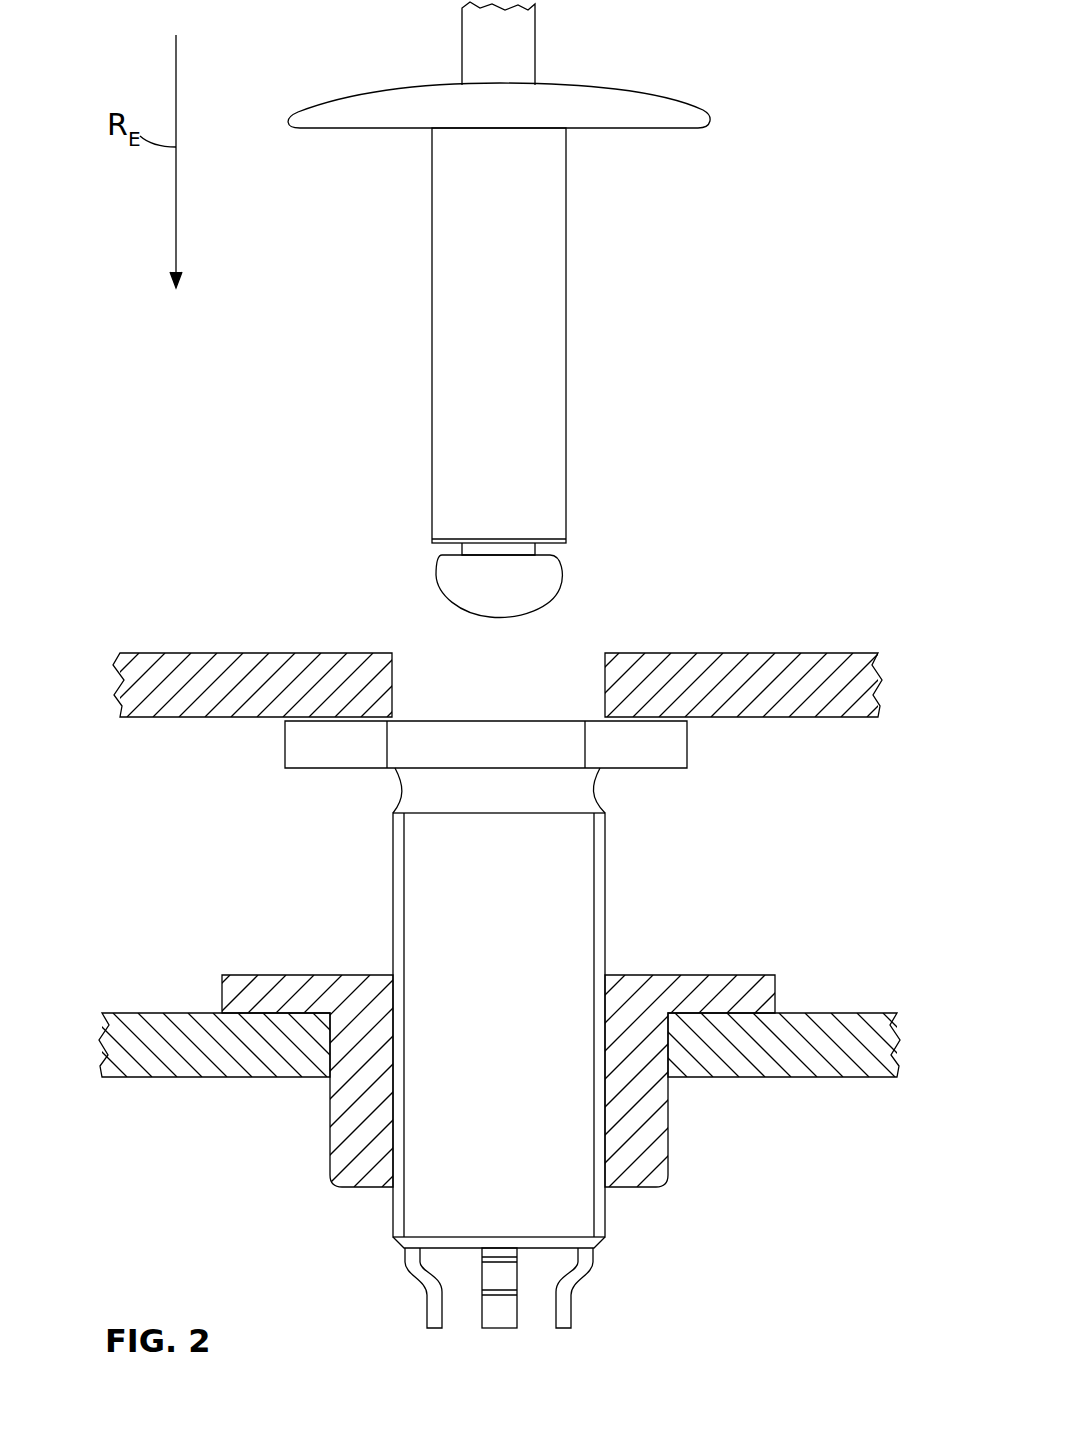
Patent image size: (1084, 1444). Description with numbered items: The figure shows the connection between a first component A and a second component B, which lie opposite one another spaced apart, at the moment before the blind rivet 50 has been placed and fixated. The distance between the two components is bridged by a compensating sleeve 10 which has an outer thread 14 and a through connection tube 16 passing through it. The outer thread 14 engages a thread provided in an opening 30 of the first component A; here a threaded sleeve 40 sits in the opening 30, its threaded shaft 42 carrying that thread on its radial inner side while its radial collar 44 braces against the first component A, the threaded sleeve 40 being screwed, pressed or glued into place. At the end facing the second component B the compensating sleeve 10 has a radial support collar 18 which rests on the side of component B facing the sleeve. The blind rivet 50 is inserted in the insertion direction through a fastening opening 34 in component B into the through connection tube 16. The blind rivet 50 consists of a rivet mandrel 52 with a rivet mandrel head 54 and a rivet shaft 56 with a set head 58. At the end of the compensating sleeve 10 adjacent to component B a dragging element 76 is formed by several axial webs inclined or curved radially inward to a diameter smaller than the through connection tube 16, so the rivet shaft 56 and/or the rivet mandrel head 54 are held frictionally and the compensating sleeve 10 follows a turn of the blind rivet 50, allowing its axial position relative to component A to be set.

The compensating sleeve 10 is at (352, 918).
The outer thread 14 is at (598, 932).
The through connection tube 16 is at (510, 712).
The support collar 18 is at (302, 747).
The opening 30 is at (668, 1068).
The fastening opening 34 is at (423, 683).
The threaded sleeve 40 is at (314, 1103).
The threaded shaft 42 is at (637, 1173).
The radial collar 44 is at (730, 992).
The blind rivet 50 is at (771, 91).
The rivet mandrel 52 is at (518, 38).
The rivet mandrel head 54 is at (530, 587).
The rivet shaft 56 is at (530, 270).
The set head 58 is at (678, 118).
The dragging element 76 is at (432, 1288).
The first component A is at (848, 1040).
The second component B is at (785, 686).